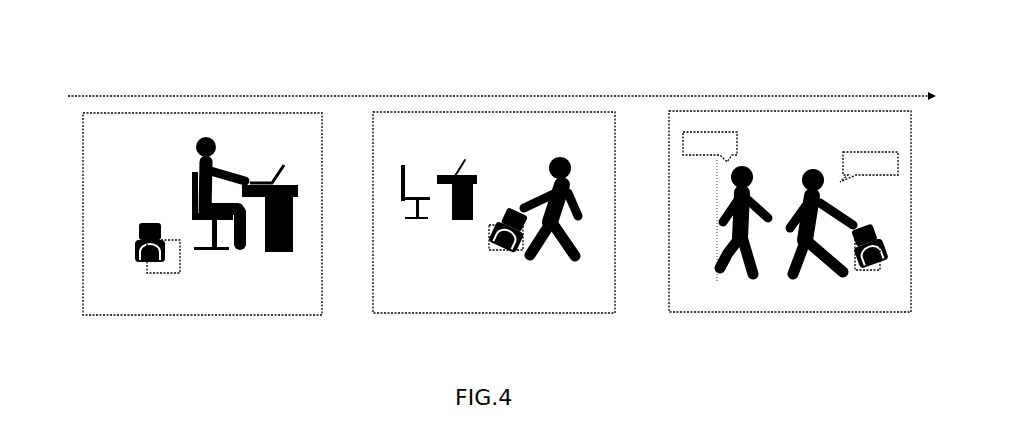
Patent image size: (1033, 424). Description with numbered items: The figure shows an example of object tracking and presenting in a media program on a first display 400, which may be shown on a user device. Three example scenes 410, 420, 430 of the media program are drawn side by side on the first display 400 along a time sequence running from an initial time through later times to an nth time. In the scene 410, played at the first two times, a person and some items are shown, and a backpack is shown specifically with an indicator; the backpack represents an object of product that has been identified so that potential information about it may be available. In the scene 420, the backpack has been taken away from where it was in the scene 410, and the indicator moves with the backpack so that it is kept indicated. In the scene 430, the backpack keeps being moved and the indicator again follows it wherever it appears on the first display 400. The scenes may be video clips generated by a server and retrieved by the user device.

The first display 400 is at (82, 61).
The scene 410 is at (82, 188).
The scene 420 is at (373, 185).
The scene 430 is at (905, 187).